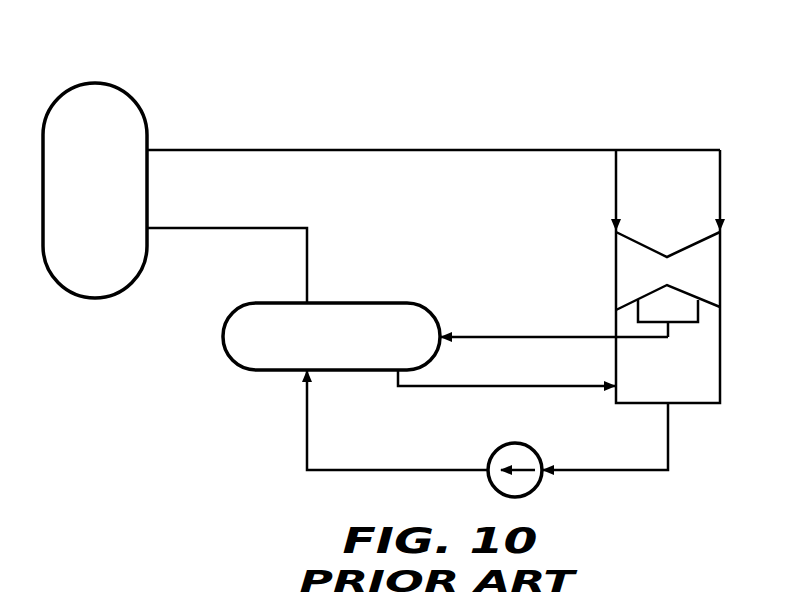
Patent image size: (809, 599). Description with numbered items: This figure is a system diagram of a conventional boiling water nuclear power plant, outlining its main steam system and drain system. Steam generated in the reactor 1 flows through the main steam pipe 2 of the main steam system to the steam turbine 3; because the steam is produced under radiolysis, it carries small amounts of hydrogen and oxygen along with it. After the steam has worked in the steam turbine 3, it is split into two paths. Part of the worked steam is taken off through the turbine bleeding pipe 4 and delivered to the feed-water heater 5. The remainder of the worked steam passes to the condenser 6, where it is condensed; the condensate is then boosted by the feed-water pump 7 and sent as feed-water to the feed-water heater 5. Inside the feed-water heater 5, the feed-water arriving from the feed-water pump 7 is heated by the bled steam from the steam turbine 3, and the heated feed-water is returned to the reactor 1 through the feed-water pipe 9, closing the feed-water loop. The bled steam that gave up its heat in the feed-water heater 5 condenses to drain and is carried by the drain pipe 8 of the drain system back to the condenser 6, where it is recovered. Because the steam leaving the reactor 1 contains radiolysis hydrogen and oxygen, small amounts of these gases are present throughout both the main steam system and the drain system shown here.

The reactor 1 is at (97, 82).
The main steam pipe 2 is at (287, 150).
The steam turbine 3 is at (720, 258).
The turbine bleeding pipe 4 is at (521, 337).
The feed-water heater 5 is at (374, 303).
The condenser 6 is at (720, 355).
The feed-water pump 7 is at (515, 445).
The drain pipe 8 is at (453, 386).
The feed-water pipe 9 is at (265, 226).